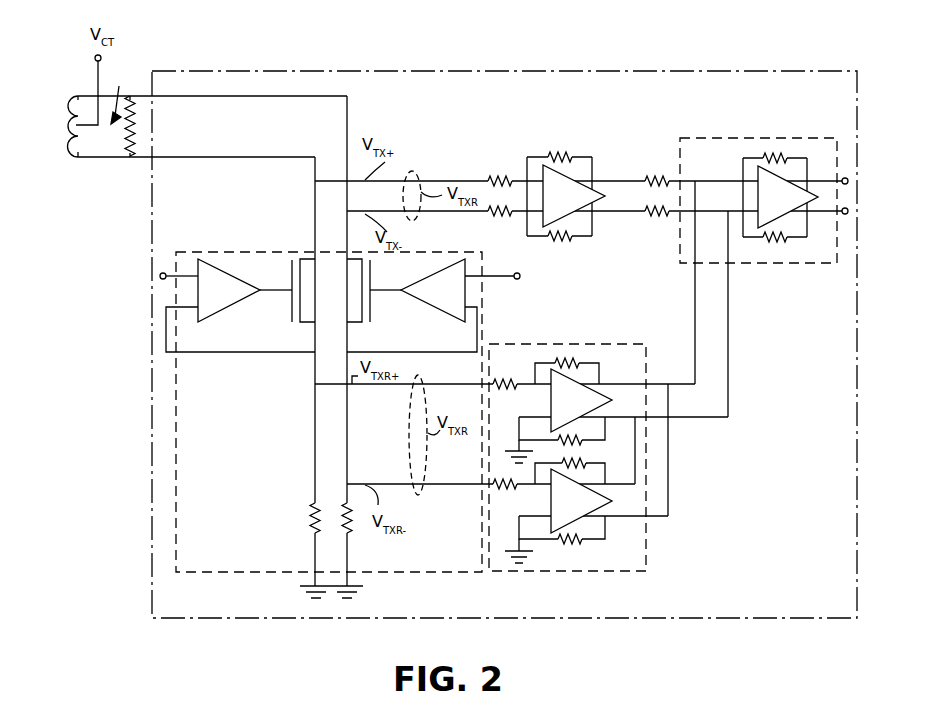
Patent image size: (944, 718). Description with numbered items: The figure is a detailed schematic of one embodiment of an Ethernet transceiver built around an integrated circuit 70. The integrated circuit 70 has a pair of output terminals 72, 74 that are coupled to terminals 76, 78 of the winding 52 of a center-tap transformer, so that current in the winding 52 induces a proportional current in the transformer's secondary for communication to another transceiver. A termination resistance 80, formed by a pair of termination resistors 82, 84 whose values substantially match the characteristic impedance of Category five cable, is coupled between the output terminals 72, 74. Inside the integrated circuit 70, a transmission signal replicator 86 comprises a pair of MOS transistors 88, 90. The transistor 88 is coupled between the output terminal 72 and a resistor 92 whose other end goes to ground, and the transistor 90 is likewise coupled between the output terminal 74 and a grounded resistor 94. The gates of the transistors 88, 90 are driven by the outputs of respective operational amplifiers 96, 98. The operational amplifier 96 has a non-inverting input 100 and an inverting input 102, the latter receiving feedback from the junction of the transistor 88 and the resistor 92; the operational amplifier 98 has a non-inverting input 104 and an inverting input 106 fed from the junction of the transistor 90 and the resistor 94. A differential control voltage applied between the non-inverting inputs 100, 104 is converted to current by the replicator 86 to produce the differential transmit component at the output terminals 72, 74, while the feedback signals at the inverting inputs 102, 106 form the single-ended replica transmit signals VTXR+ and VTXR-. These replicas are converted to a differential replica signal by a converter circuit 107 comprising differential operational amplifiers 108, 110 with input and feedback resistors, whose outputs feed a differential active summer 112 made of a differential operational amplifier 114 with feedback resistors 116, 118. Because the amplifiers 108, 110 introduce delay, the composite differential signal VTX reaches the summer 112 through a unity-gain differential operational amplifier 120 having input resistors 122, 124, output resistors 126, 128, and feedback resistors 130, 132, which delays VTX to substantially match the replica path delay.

The integrated circuit 70 is at (505, 71).
The terminal 78 is at (77, 93).
The output terminal 74 is at (140, 93).
The termination resistance 80 is at (118, 94).
The termination resistor 82 is at (133, 102).
The termination resistor 84 is at (133, 145).
The winding 52 is at (66, 150).
The terminal 76 is at (90, 160).
The output terminal 72 is at (140, 158).
The transmission signal replicator 86 is at (240, 251).
The non-inverting input 100 is at (183, 272).
The operational amplifier 96 is at (228, 272).
The inverting input 102 is at (183, 310).
The transistor 88 is at (292, 305).
The transistor 90 is at (372, 308).
The operational amplifier 98 is at (440, 267).
The non-inverting input 104 is at (497, 275).
The inverting input 106 is at (481, 312).
The input resistor 122 is at (500, 176).
The input resistor 124 is at (497, 214).
The feedback resistor 130 is at (557, 153).
The differential operational amplifier 120 is at (598, 186).
The feedback resistor 132 is at (562, 240).
The output resistor 126 is at (652, 172).
The output resistor 128 is at (658, 218).
The differential active summer 112 is at (700, 138).
The feedback resistor 116 is at (772, 154).
The differential operational amplifier 114 is at (806, 210).
The feedback resistor 118 is at (778, 244).
The differential operational amplifier 108 is at (610, 402).
The differential operational amplifier 110 is at (612, 503).
The converter circuit 107 is at (646, 548).
The resistor 92 is at (312, 522).
The resistor 94 is at (348, 528).